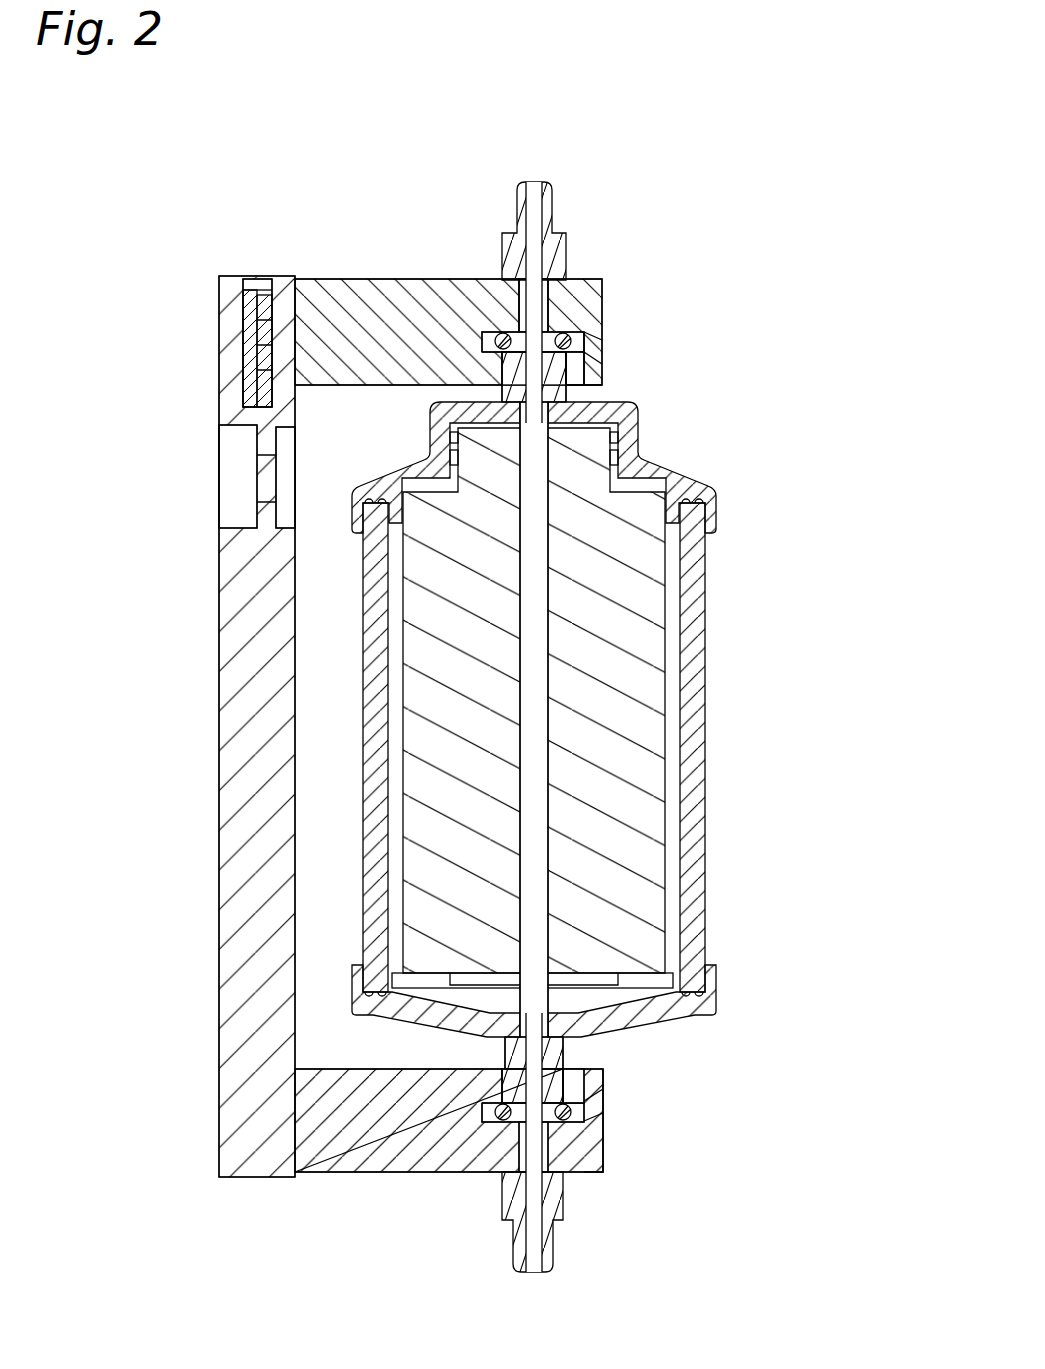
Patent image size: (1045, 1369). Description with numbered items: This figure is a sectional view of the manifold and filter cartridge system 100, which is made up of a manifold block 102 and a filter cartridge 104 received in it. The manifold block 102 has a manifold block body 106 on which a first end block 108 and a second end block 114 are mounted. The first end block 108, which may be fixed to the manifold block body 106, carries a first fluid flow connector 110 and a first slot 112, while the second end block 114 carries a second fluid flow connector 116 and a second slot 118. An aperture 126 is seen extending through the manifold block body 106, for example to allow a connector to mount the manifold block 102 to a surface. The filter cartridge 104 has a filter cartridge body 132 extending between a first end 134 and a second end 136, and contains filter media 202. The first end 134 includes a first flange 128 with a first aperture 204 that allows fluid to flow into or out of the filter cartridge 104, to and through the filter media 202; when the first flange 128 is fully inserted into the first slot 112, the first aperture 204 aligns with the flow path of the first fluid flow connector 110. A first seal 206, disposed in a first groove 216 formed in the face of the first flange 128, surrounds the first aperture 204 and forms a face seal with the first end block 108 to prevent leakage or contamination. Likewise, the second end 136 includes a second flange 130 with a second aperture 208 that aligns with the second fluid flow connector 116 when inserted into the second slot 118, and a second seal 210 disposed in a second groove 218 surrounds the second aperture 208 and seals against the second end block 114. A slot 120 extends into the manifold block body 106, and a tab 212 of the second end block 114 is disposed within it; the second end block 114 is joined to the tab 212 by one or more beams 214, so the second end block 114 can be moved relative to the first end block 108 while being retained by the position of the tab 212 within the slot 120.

The manifold and filter cartridge system 100 is at (822, 130).
The manifold block 102 is at (195, 822).
The filter cartridge 104 is at (730, 665).
The manifold block body 106 is at (220, 765).
The first end block 108 is at (363, 1173).
The first fluid flow connector 110 is at (523, 1270).
The first slot 112 is at (605, 1120).
The second end block 114 is at (333, 282).
The second fluid flow connector 116 is at (548, 185).
The second slot 118 is at (606, 336).
The slot 120 is at (257, 283).
The aperture 126 is at (232, 468).
The first flange 128 is at (590, 1103).
The second flange 130 is at (598, 358).
The filter cartridge body 132 is at (705, 743).
The first end 134 is at (663, 1020).
The second end 136 is at (660, 470).
The filter media 202 is at (705, 593).
The first aperture 204 is at (540, 1115).
The first seal 206 is at (568, 1118).
The second aperture 208 is at (536, 338).
The second seal 210 is at (500, 335).
The tab 212 is at (245, 330).
The beam 214 is at (272, 335).
The first groove 216 is at (503, 1125).
The second groove 218 is at (562, 340).